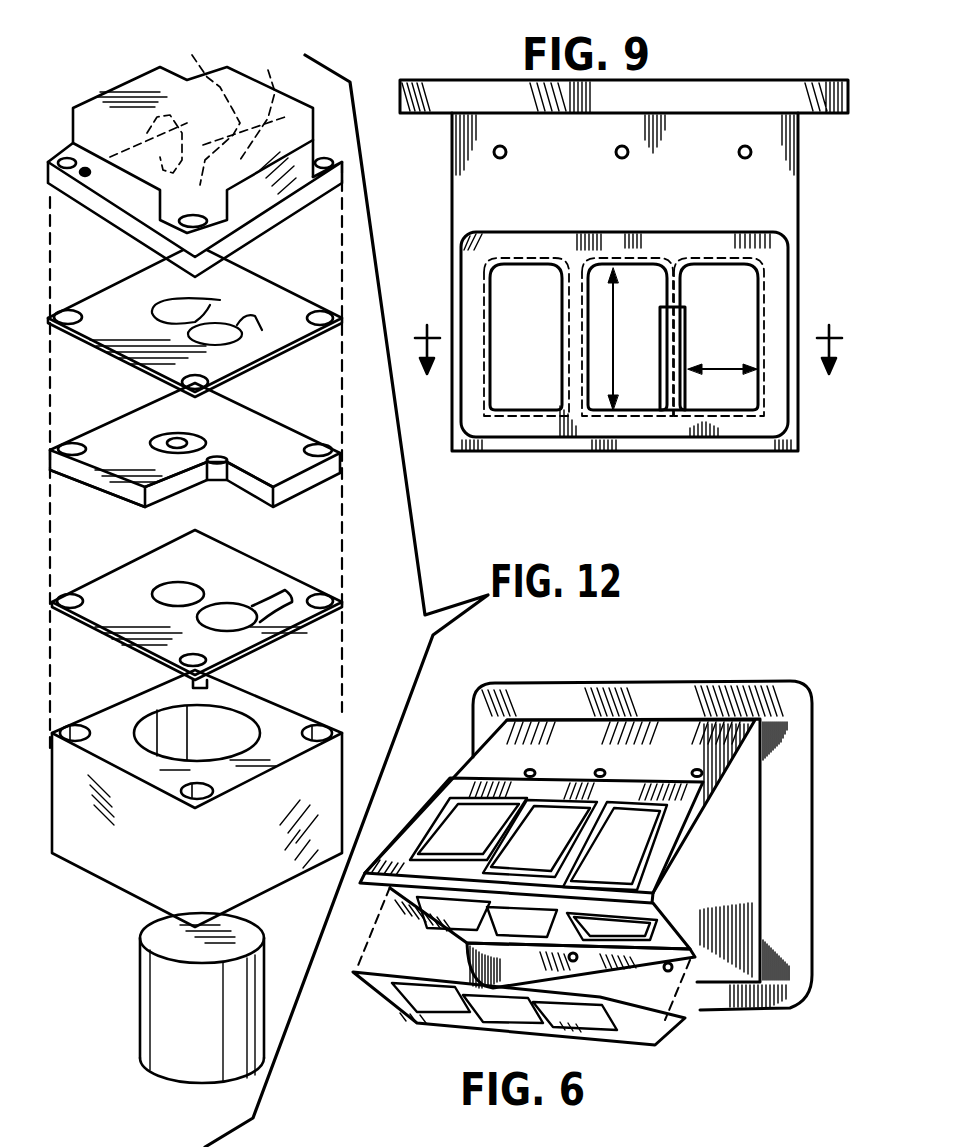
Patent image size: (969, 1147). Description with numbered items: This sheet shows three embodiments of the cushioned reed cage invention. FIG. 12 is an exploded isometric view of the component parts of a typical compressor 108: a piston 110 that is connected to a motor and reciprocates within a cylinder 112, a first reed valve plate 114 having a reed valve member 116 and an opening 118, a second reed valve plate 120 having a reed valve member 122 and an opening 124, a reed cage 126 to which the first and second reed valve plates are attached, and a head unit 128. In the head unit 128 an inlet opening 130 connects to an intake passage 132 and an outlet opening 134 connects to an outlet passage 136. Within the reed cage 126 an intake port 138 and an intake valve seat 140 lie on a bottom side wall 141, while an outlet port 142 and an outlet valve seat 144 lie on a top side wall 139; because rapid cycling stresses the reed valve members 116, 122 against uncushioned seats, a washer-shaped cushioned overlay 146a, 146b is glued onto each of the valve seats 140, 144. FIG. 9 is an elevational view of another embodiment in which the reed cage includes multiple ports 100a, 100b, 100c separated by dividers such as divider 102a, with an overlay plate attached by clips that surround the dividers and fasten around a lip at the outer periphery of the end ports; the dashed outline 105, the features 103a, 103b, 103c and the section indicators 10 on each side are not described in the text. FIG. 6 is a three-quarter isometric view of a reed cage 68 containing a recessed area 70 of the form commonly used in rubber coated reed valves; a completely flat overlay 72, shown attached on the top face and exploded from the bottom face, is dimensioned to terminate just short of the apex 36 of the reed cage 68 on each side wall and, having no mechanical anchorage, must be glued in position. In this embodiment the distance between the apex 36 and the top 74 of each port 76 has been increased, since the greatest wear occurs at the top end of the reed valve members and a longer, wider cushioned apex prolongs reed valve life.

In FIG. 12, the compressor 108 is at (38, 398).
In FIG. 12, the piston 110 is at (143, 980).
In FIG. 12, the cylinder 112 is at (260, 748).
In FIG. 12, the first reed valve plate 114 is at (222, 609).
In FIG. 12, the reed valve member 116 is at (275, 602).
In FIG. 12, the opening 118 is at (152, 598).
In FIG. 12, the second reed valve plate 120 is at (195, 314).
In FIG. 12, the reed valve member 122 is at (200, 283).
In FIG. 12, the opening 124 is at (241, 334).
In FIG. 12, the reed cage 126 is at (220, 460).
In FIG. 12, the head unit 128 is at (195, 151).
In FIG. 12, the inlet opening 130 is at (268, 72).
In FIG. 12, the intake passage 132 is at (200, 70).
In FIG. 12, the outlet opening 134 is at (87, 176).
In FIG. 12, the outlet passage 136 is at (165, 112).
In FIG. 12, the intake port 138 is at (243, 450).
In FIG. 12, the top side wall 139 is at (297, 462).
In FIG. 12, the intake valve seat 140 is at (216, 488).
In FIG. 12, the bottom side wall 141 is at (90, 500).
In FIG. 12, the outlet port 142 is at (172, 456).
In FIG. 12, the outlet valve seat 144 is at (213, 440).
In FIG. 12, the cushioned overlay 146a is at (170, 448).
In FIG. 12, the cushioned overlay 146b is at (245, 495).
In FIG. 9, the dashed outline 105 is at (487, 277).
In FIG. 9, the port 100a is at (537, 295).
In FIG. 9, the port 100b is at (634, 303).
In FIG. 9, the port 100c is at (709, 295).
In FIG. 9, the divider 102a is at (573, 303).
In FIG. 9, the window edge 103a is at (535, 402).
In FIG. 9, the window edge 103b is at (630, 408).
In FIG. 9, the window edge 103c is at (703, 408).
In FIG. 9, the section line 10 is at (628, 336).
In FIG. 6, the reed cage 68 is at (762, 740).
In FIG. 6, the recessed area 70 is at (702, 807).
In FIG. 6, the overlay 72 is at (528, 906).
In FIG. 6, the top 74 is at (528, 878).
In FIG. 6, the port 76 is at (612, 812).
In FIG. 6, the apex 36 is at (370, 880).